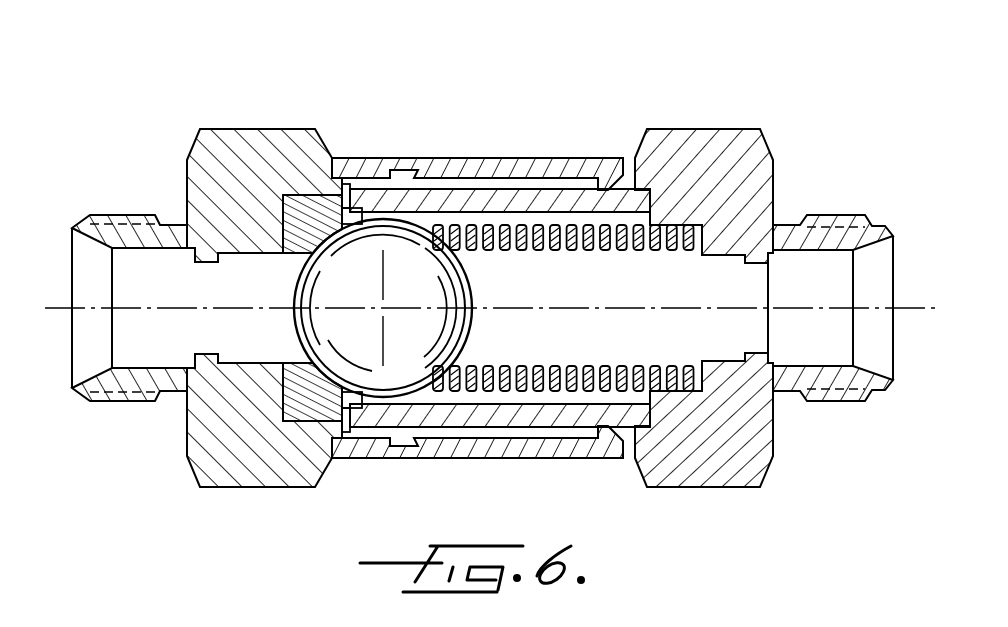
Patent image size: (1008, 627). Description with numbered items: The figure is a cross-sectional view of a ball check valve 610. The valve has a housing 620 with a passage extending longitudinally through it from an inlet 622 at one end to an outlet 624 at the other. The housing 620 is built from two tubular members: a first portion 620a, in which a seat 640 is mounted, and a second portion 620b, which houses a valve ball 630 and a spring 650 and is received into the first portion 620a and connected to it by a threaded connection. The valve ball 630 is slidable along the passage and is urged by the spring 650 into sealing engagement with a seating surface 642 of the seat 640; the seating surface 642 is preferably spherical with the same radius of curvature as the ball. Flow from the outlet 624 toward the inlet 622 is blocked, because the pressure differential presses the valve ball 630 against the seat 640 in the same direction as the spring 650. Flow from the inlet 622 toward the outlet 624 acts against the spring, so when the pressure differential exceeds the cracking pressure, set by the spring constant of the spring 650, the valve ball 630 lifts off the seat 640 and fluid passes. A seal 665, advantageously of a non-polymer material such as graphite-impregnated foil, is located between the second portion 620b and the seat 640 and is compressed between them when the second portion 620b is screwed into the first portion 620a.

The ball check valve 610 is at (587, 130).
The housing 620 is at (460, 295).
The first portion 620a is at (252, 484).
The second portion 620b is at (713, 481).
The inlet 622 is at (88, 274).
The outlet 624 is at (872, 266).
The valve ball 630 is at (424, 238).
The seat 640 is at (309, 212).
The seating surface 642 is at (330, 235).
The spring 650 is at (536, 252).
The seal 665 is at (357, 415).